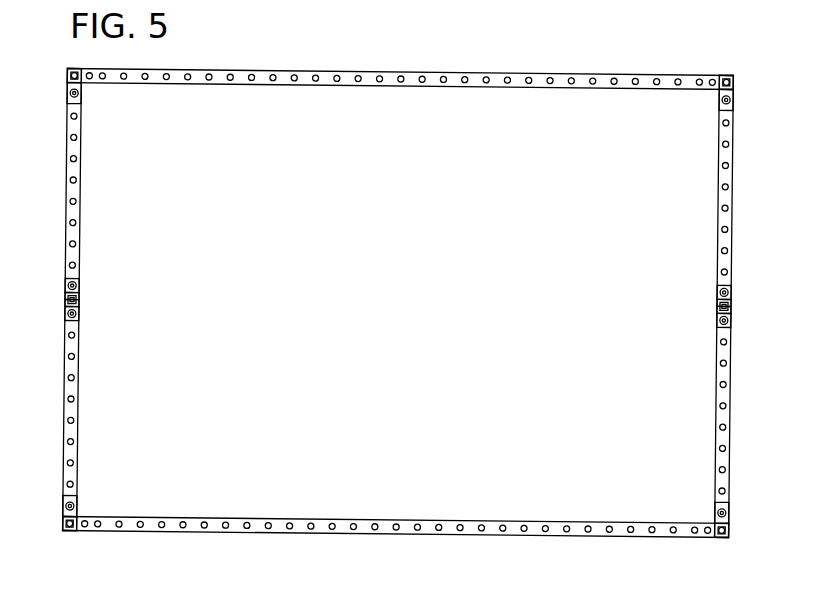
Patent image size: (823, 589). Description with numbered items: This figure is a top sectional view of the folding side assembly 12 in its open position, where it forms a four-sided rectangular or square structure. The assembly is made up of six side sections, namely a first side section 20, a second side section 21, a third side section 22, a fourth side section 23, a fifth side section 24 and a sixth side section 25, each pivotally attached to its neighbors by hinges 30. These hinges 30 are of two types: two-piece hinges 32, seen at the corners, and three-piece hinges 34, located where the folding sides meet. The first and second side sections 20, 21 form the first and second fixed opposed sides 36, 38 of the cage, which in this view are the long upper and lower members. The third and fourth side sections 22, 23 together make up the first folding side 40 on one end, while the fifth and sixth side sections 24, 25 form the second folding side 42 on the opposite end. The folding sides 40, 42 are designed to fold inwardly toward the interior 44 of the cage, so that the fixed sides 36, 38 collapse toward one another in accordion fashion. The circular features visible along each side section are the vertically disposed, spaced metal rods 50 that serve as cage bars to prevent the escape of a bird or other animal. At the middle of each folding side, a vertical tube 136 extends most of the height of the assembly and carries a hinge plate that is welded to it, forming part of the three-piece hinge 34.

The folding side assembly 12 is at (563, 66).
The first side section 20 is at (261, 527).
The second side section 21 is at (473, 80).
The third side section 22 is at (70, 150).
The fourth side section 23 is at (68, 407).
The fifth side section 24 is at (733, 432).
The sixth side section 25 is at (736, 200).
The hinges 30 is at (67, 313).
The two-piece hinges 32 is at (66, 73).
The three-piece hinges 34 is at (66, 302).
The first fixed opposed side 36 is at (168, 545).
The second fixed opposed side 38 is at (249, 60).
The first folding side 40 is at (56, 197).
The second folding side 42 is at (745, 127).
The interior 44 is at (397, 310).
The metal rods 50 is at (731, 385).
The vertical tube 136 is at (82, 302).